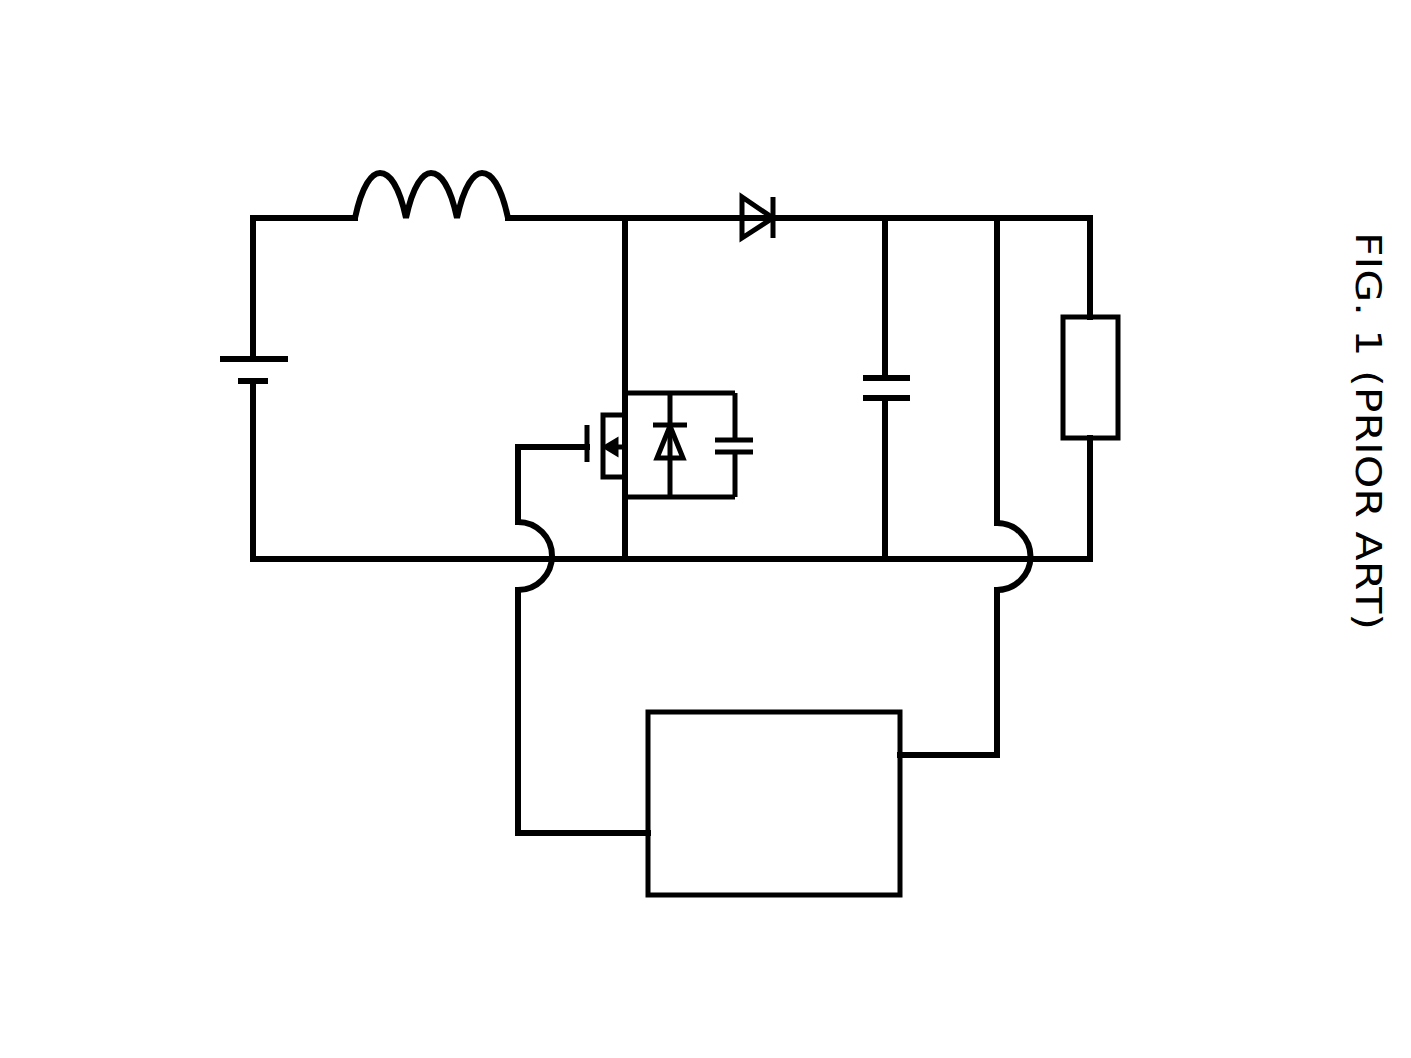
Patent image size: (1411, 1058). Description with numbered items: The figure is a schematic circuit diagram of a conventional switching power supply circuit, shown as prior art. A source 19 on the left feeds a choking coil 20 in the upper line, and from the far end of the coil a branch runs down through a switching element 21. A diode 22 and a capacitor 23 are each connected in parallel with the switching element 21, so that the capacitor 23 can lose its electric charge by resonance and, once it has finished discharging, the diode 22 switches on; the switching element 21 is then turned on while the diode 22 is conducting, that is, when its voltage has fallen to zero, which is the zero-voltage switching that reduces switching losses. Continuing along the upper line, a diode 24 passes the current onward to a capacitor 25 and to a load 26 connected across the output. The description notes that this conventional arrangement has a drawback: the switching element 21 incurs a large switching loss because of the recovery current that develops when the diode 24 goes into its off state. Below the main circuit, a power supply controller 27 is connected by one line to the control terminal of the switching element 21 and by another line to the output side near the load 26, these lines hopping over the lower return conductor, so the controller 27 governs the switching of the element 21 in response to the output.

The battery 19 is at (235, 350).
The choking coil 20 is at (432, 163).
The switching element 21 is at (593, 415).
The diode 22 is at (657, 460).
The capacitor 23 is at (727, 458).
The diode 24 is at (760, 193).
The capacitor 25 is at (900, 365).
The load 26 is at (1112, 305).
The power supply controller 27 is at (747, 708).